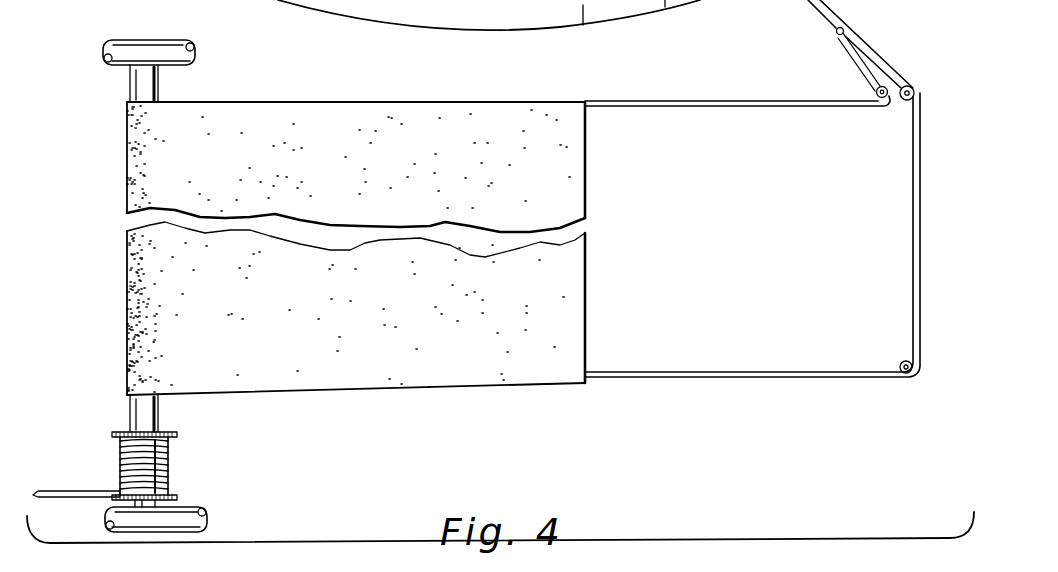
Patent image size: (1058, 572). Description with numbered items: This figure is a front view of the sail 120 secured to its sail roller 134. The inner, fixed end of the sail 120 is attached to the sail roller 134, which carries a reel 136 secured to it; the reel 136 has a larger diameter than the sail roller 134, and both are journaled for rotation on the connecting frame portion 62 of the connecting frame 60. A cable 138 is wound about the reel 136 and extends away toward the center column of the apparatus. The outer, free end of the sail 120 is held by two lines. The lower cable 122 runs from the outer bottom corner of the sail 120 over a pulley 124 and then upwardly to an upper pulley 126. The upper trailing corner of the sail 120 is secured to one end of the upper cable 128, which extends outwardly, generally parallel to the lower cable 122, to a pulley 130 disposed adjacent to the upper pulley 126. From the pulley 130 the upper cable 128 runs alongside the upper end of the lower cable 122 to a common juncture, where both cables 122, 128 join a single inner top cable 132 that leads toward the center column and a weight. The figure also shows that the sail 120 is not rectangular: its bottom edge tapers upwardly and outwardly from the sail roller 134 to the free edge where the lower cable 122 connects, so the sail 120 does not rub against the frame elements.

The connecting frame 60 is at (185, 493).
The connecting frame portion 62 is at (193, 488).
The sail 120 is at (573, 292).
The lower cable 122 is at (722, 348).
The pulley 124 is at (902, 362).
The upper pulley 126 is at (911, 102).
The upper cable 128 is at (702, 100).
The pulley 130 is at (876, 90).
The inner top cable 132 is at (842, 23).
The sail roller 134 is at (159, 421).
The reel 136 is at (178, 437).
The cable 138 is at (81, 490).